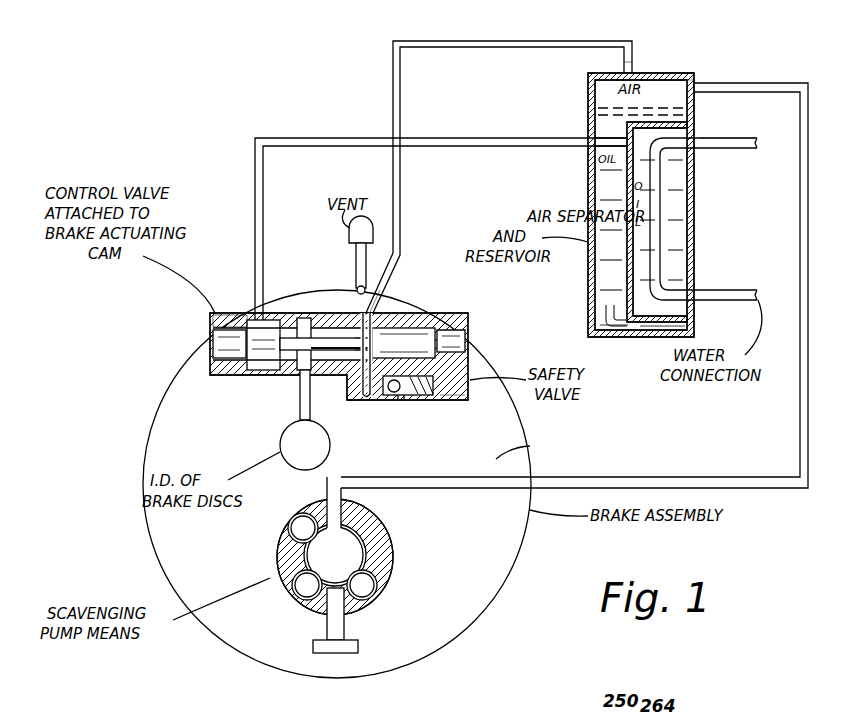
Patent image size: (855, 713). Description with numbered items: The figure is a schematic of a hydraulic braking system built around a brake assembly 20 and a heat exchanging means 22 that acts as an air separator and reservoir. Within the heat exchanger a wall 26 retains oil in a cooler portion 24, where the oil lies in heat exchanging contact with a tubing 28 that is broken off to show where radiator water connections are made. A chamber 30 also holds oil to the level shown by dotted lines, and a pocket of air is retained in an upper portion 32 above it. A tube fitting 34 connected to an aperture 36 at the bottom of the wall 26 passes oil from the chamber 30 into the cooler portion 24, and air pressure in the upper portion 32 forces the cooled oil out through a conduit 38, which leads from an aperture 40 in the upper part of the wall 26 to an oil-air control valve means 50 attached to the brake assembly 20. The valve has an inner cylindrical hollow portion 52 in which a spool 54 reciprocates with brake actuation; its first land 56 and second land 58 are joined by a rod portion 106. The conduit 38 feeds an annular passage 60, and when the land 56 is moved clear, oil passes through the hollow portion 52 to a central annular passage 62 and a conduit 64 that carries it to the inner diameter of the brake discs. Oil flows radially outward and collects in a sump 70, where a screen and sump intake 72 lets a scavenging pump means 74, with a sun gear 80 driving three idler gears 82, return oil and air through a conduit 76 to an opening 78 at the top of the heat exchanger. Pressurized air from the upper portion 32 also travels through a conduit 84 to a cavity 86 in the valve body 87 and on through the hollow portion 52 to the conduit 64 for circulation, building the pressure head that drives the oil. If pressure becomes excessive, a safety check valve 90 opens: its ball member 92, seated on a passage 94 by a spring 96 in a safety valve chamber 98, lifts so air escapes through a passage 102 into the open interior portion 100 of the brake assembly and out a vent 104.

The brake assembly 20 is at (150, 392).
The heat exchanging means 22 is at (695, 200).
The cooler portion 24 is at (678, 258).
The wall 26 is at (692, 120).
The tubing 28 is at (736, 146).
The chamber 30 is at (595, 195).
The upper portion of the chamber 32 is at (626, 72).
The tube fitting 34 is at (605, 310).
The aperture 36 is at (631, 322).
The conduit 38 is at (505, 147).
The aperture 40 is at (618, 131).
The oil-air control valve means 50 is at (272, 305).
The inner cylindrical hollow portion 52 is at (213, 336).
The spool 54 is at (319, 304).
The first land 56 is at (232, 318).
The second land 58 is at (402, 287).
The annular passage 60 is at (264, 371).
The centrally located annular passage 62 is at (312, 370).
The conduit 64 is at (299, 408).
The sump 70 is at (360, 667).
The screen and sump intake 72 is at (350, 635).
The scavenging pump means 74 is at (278, 556).
The conduit 76 is at (662, 476).
The opening 78 is at (692, 73).
The sun or pump driving gear 80 is at (348, 540).
The idler pumping gears 82 is at (303, 522).
The conduit 84 is at (392, 56).
The cavity 86 is at (370, 343).
The valve body 87 is at (366, 400).
The blow-off or safety check valve 90 is at (416, 396).
The ball member 92 is at (394, 382).
The passage 94 is at (391, 393).
The spring 96 is at (446, 384).
The safety valve chamber 98 is at (448, 396).
The open interior portion 100 is at (500, 446).
The passage 102 is at (401, 401).
The vent 104 is at (375, 233).
The rod portion 106 is at (340, 345).